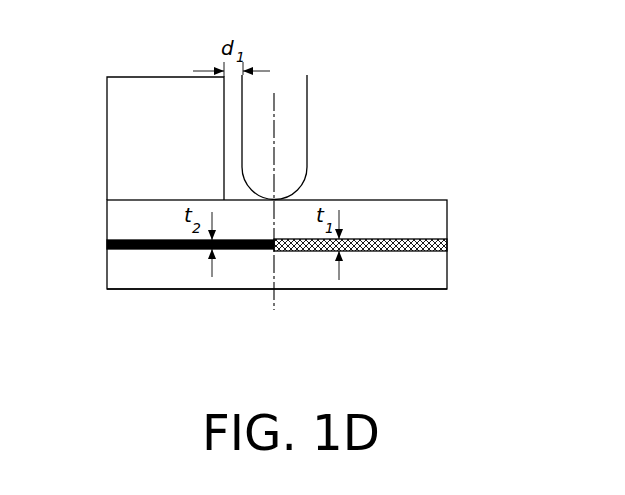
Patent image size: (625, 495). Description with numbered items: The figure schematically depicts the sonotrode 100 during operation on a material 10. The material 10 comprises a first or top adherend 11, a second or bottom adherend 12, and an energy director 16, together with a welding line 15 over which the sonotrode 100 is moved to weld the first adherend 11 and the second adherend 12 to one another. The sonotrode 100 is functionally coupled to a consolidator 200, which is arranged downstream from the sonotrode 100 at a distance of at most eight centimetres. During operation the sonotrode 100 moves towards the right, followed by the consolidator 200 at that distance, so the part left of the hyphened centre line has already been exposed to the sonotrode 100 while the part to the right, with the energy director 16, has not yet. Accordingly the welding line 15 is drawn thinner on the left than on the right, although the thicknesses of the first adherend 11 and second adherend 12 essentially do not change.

The material 10 is at (309, 213).
The first adherend 11 is at (453, 213).
The second adherend 12 is at (455, 265).
The welding line 15 is at (105, 244).
The energy director 16 is at (460, 245).
The sonotrode 100 is at (315, 143).
The consolidator 200 is at (187, 147).